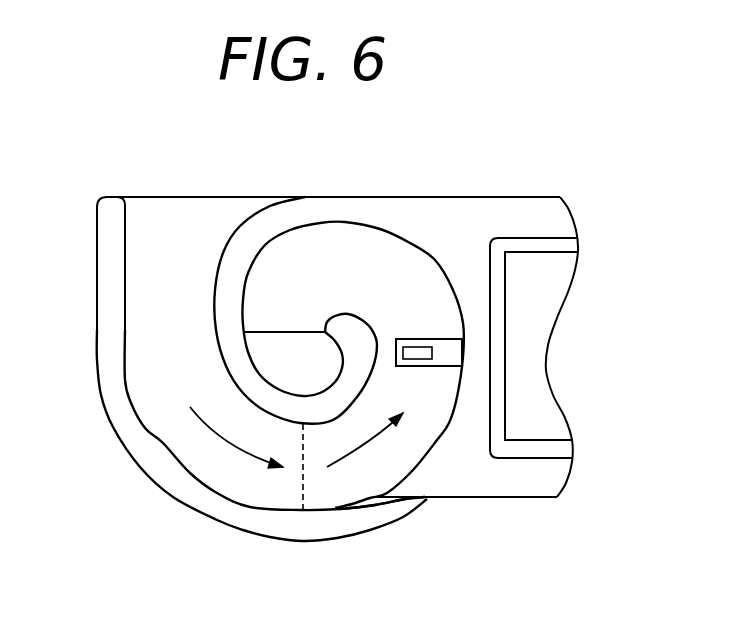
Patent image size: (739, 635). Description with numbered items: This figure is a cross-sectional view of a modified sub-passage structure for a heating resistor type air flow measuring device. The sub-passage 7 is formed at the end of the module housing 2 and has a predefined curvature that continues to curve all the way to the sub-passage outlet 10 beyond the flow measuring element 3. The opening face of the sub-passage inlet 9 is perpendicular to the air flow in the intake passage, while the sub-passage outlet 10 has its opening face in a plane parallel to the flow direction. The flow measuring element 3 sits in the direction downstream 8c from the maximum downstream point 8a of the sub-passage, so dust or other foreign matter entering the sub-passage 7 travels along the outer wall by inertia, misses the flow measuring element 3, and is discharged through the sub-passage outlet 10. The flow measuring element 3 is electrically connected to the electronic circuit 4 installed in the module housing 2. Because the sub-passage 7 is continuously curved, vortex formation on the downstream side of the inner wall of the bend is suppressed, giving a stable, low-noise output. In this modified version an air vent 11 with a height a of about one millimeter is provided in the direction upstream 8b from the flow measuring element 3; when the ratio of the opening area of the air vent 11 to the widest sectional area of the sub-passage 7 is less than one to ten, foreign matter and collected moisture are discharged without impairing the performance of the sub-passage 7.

The module housing 2 is at (497, 197).
The flow measuring element 3 is at (430, 367).
The electronic circuit 4 is at (552, 278).
The sub-passage 7 is at (177, 415).
The maximum downstream point 8a is at (287, 513).
The upstream direction 8b is at (227, 447).
The downstream direction 8c is at (342, 470).
The sub-passage inlet 9 is at (152, 197).
The sub-passage outlet 10 is at (270, 353).
The air vent 11 is at (368, 512).
The height of air vent a is at (397, 502).